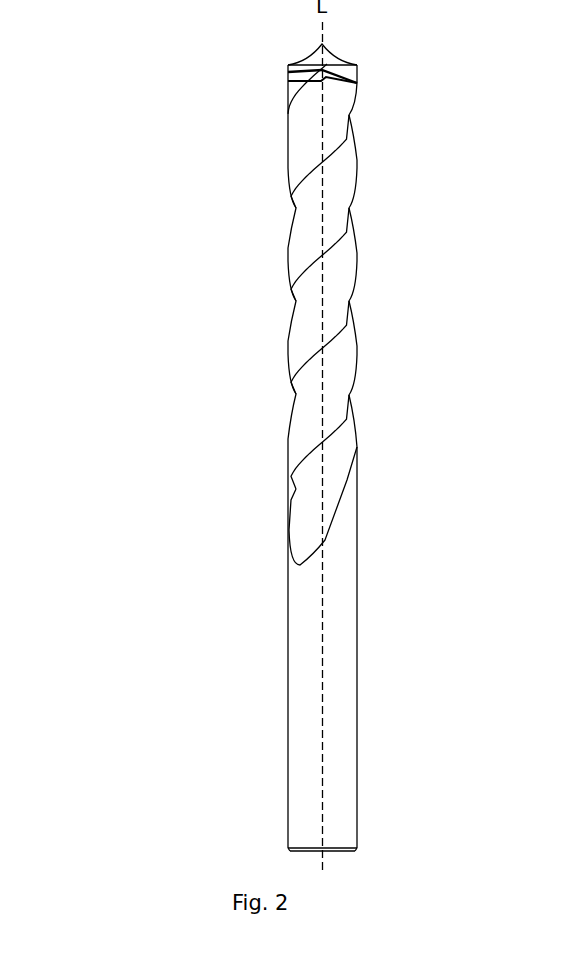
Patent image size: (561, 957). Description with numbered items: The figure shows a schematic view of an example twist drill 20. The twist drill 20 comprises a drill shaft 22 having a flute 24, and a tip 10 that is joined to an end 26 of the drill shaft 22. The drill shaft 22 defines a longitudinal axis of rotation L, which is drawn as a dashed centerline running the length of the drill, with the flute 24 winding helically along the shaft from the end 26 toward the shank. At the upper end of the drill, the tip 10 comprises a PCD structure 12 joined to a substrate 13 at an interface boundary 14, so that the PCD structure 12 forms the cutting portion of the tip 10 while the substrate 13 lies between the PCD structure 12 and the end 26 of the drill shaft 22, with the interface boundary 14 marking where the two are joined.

The tip 10 is at (367, 73).
The PCD structure 12 is at (288, 73).
The substrate 13 is at (287, 96).
The interface boundary 14 is at (288, 82).
The twist drill 20 is at (192, 342).
The drill shaft 22 is at (357, 565).
The flute 24 is at (352, 411).
The end 26 is at (288, 116).